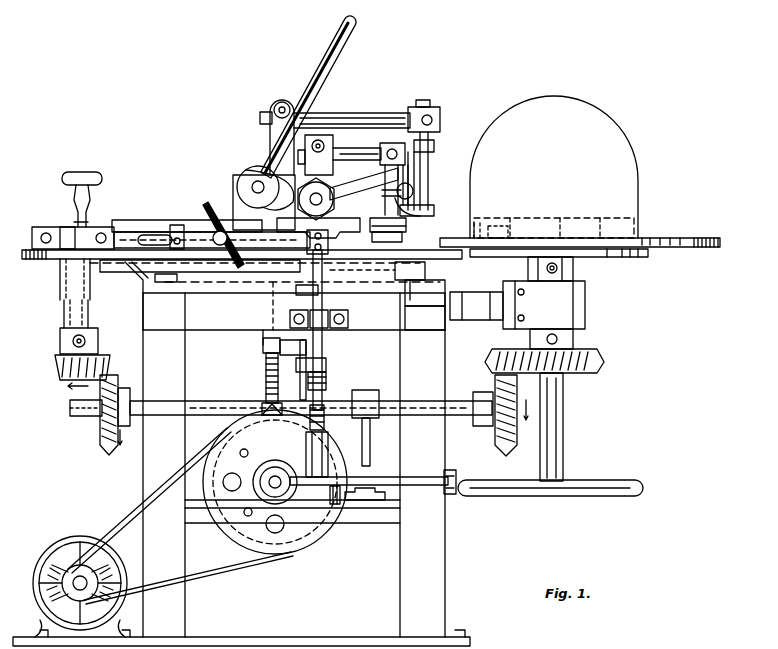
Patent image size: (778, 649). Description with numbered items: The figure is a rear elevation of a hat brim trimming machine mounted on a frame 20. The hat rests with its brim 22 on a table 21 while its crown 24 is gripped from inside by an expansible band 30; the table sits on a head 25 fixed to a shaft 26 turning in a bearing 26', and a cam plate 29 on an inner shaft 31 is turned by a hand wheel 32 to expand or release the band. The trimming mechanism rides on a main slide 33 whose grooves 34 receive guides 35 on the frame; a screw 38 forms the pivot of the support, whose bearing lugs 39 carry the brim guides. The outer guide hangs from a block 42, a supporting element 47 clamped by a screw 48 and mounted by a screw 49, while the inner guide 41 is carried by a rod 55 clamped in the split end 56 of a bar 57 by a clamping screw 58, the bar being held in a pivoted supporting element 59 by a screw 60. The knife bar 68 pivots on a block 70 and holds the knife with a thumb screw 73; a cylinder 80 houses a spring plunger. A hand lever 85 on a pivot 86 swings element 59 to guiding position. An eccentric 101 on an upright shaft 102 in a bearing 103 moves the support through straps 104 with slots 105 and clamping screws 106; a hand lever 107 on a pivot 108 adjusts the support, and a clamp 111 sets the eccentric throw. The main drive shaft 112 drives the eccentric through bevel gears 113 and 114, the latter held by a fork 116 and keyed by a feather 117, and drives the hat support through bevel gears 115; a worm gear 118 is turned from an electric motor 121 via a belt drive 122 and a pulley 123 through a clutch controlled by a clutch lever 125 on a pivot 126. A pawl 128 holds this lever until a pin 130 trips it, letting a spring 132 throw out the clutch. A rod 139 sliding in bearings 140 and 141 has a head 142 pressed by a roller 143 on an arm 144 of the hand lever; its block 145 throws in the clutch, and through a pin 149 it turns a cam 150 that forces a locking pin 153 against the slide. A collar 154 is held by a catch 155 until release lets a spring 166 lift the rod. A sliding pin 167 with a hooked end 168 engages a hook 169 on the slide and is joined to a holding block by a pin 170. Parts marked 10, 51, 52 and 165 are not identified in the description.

The connection 10 is at (392, 256).
The frame 20 is at (143, 470).
The table 21 is at (695, 258).
The brim 22 is at (678, 240).
The crown 24 is at (639, 190).
The head 25 is at (600, 258).
The shaft 26 is at (566, 305).
The bearing 26' is at (581, 334).
The cam plate 29 is at (486, 224).
The expansible band 30 is at (478, 218).
The shaft 31 is at (565, 426).
The hand wheel 32 is at (602, 498).
The main slide 33 is at (66, 278).
The grooves 34 is at (134, 272).
The guides 35 is at (222, 272).
The screw 38 is at (300, 240).
The bearing lugs 39 is at (232, 190).
The inner guide 41 is at (434, 214).
The block 42 is at (384, 182).
The supporting element 47 is at (315, 155).
The clamping screw 48 is at (324, 144).
The screw 49 is at (354, 150).
The foot 51 is at (370, 234).
The base 52 is at (386, 244).
The rod 55 is at (430, 172).
The split end 56 is at (434, 108).
The bar 57 is at (358, 112).
The clamping screw 58 is at (434, 122).
The supporting element 59 is at (272, 110).
The clamping screw 60 is at (283, 99).
The bar 68 is at (430, 183).
The block 70 is at (434, 150).
The thumb screw 73 is at (414, 195).
The cylinder 80 is at (344, 180).
The hand lever 85 is at (335, 70).
The pivot 86 is at (244, 172).
The eccentric 101 is at (104, 226).
The upright shaft 102 is at (62, 317).
The bearing 103 is at (70, 332).
The straps 104 is at (68, 226).
The elongated slots 105 is at (196, 230).
The clamping screws 106 is at (275, 222).
The hand lever 107 is at (140, 232).
The pivot 108 is at (178, 224).
The clamp 111 is at (104, 180).
The main drive shaft 112 is at (204, 400).
The bevel gear 113 is at (58, 374).
The bevel gear 114 is at (104, 450).
The bevel gears 115 is at (598, 372).
The fork 116 is at (130, 392).
The feather 117 is at (80, 418).
The worm gear 118 is at (266, 366).
The electric motor 121 is at (38, 562).
The belt drive 122 is at (118, 518).
The pulley 123 is at (232, 526).
The clutch lever 125 is at (424, 490).
The pivot 126 is at (450, 468).
The pawl 128 is at (366, 502).
The pin 130 is at (371, 451).
The spring 132 is at (333, 506).
The rod 139 is at (326, 352).
The bearing 140 is at (350, 307).
The bearing 141 is at (326, 406).
The elongated head 142 is at (360, 213).
The roller 143 is at (298, 200).
The arm 144 is at (256, 182).
The block 145 is at (328, 460).
The pin 149 is at (266, 395).
The cam 150 is at (263, 347).
The locking pin 153 is at (270, 306).
The collar 154 is at (304, 283).
The catch 155 is at (330, 309).
The collar 165 is at (326, 362).
The spring 166 is at (326, 380).
The sliding pin 167 is at (476, 306).
The hooked end 168 is at (425, 317).
The hook 169 is at (414, 274).
The pin 170 is at (510, 226).